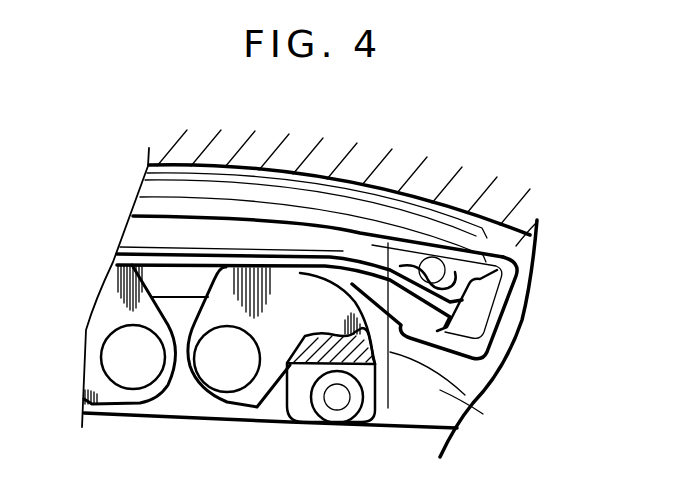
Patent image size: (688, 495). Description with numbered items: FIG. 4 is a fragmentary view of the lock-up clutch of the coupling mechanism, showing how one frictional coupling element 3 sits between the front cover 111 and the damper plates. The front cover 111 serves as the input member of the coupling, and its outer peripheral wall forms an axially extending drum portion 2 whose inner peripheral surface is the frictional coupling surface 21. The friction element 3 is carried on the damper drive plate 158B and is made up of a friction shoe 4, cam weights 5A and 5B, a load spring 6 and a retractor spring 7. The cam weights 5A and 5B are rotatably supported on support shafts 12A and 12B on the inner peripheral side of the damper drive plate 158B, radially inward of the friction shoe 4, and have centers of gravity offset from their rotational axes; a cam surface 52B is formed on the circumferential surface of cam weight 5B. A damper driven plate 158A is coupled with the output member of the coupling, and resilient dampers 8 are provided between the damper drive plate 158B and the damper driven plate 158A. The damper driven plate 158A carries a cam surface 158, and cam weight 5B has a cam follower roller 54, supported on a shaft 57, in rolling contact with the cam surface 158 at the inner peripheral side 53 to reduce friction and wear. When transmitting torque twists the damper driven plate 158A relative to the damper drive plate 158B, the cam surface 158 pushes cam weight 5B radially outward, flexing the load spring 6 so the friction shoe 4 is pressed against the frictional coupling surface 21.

The drum portion 2 is at (318, 170).
The friction element 3 is at (515, 303).
The friction shoe 4 is at (223, 195).
The cam weight 5A is at (102, 318).
The cam weight 5B is at (242, 394).
The load spring 6 is at (443, 326).
The retractor spring 7 is at (345, 258).
The damper 8 is at (336, 408).
The support shaft 12A is at (133, 378).
The support shaft 12B is at (213, 376).
The frictional coupling surface 21 is at (518, 238).
The cam surface 52B is at (473, 407).
The inner peripheral side 53 is at (277, 400).
The cam follower roller 54 is at (303, 417).
The shaft 57 is at (345, 406).
The front cover 111 is at (477, 200).
The cam surface 158 is at (393, 426).
The damper driven plate 158A is at (447, 445).
The damper drive plate 158B is at (467, 378).